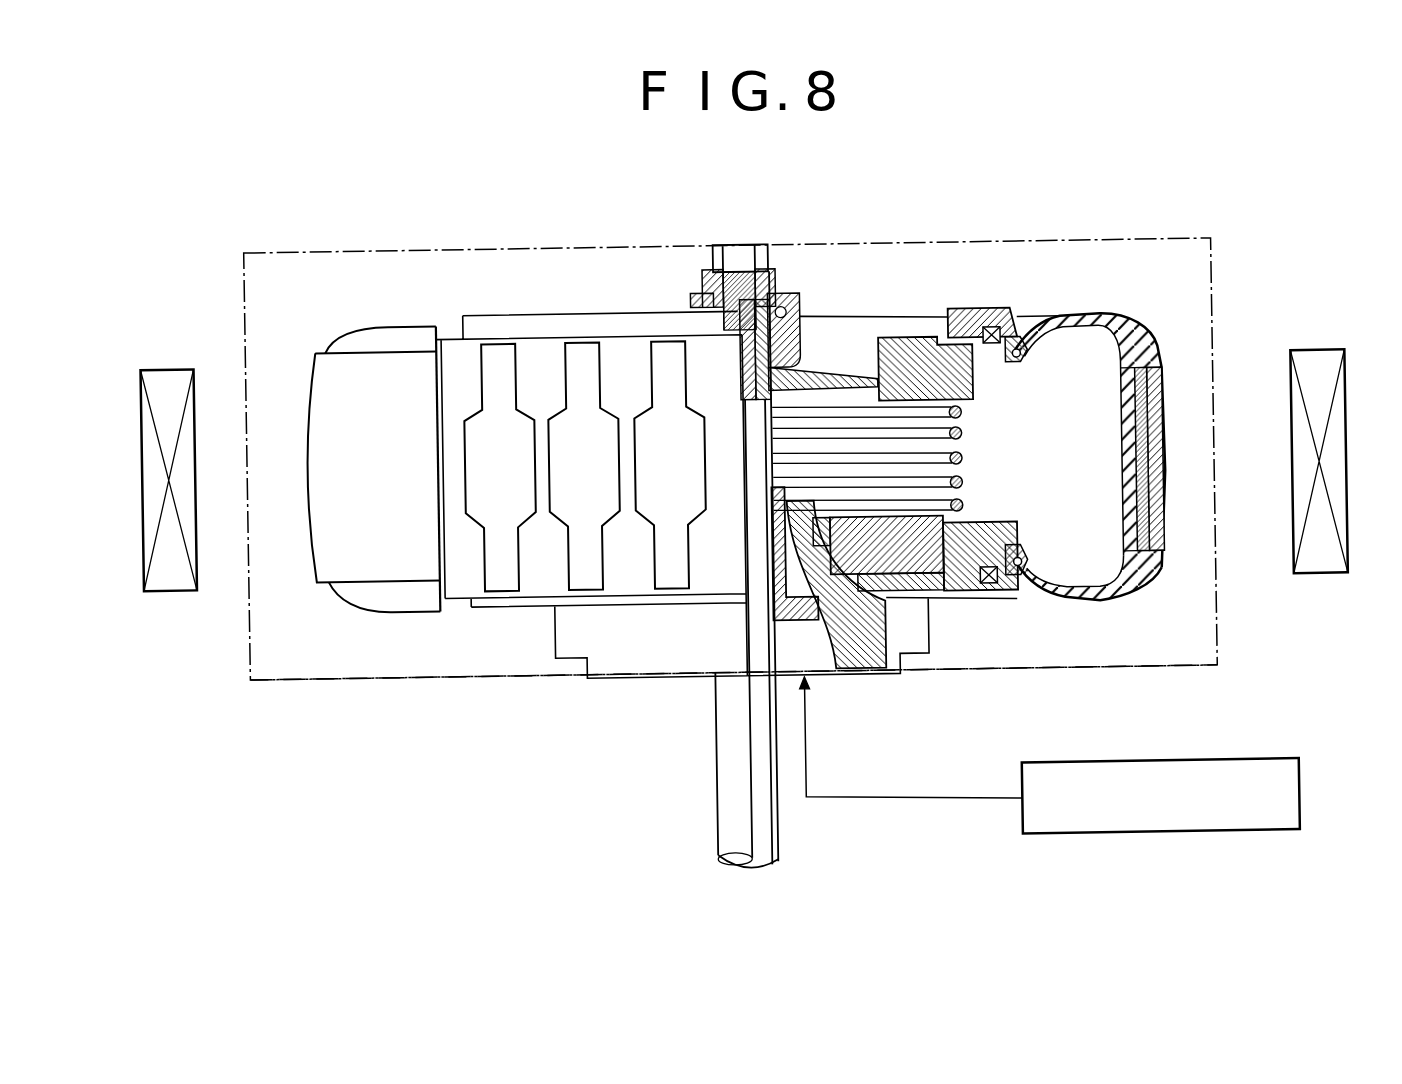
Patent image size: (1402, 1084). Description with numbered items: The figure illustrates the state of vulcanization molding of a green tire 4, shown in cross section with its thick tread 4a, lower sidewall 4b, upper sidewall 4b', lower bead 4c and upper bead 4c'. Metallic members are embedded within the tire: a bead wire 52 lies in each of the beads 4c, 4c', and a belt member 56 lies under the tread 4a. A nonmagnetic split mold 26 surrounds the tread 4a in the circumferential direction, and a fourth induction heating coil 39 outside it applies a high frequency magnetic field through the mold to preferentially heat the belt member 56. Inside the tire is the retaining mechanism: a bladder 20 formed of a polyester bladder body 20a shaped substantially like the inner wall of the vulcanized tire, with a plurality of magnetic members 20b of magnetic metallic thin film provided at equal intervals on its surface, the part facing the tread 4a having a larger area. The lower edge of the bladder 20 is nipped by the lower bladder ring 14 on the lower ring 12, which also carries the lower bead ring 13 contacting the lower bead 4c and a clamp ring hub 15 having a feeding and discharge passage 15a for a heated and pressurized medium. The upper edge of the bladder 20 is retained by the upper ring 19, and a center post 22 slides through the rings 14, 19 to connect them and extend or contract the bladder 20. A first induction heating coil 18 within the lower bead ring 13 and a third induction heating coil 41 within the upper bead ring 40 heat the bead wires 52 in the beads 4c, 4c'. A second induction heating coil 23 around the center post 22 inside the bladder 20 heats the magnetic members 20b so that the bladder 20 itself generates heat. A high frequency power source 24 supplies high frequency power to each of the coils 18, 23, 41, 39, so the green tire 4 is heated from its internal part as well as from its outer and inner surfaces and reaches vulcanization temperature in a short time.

The green tire 4 is at (1137, 333).
The tread 4a is at (1155, 401).
The lower sidewall 4b is at (1074, 611).
The upper sidewall 4b' is at (1116, 285).
The lower bead 4c is at (1043, 543).
The upper bead 4c' is at (1045, 304).
The lower ring 12 is at (632, 680).
The lower bead ring 13 is at (1000, 600).
The lower bladder ring 14 is at (964, 510).
The clamp ring hub 15 is at (819, 657).
The feeding and discharge passage 15a is at (846, 642).
The first induction heating coil 18 is at (987, 590).
The upper ring 19 is at (816, 352).
The bladder 20 is at (632, 335).
The bladder body 20a is at (446, 362).
The magnetic member 20b is at (661, 367).
The center post 22 is at (717, 821).
The second induction heating coil 23 is at (957, 473).
The high frequency power source 24 is at (1134, 841).
The split mold 26 is at (876, 247).
The fourth induction heating coil 39 is at (1320, 359).
The upper bead ring 40 is at (962, 312).
The third induction heating coil 41 is at (995, 330).
The bead wire 52 is at (1019, 367).
The belt member 56 is at (1143, 455).